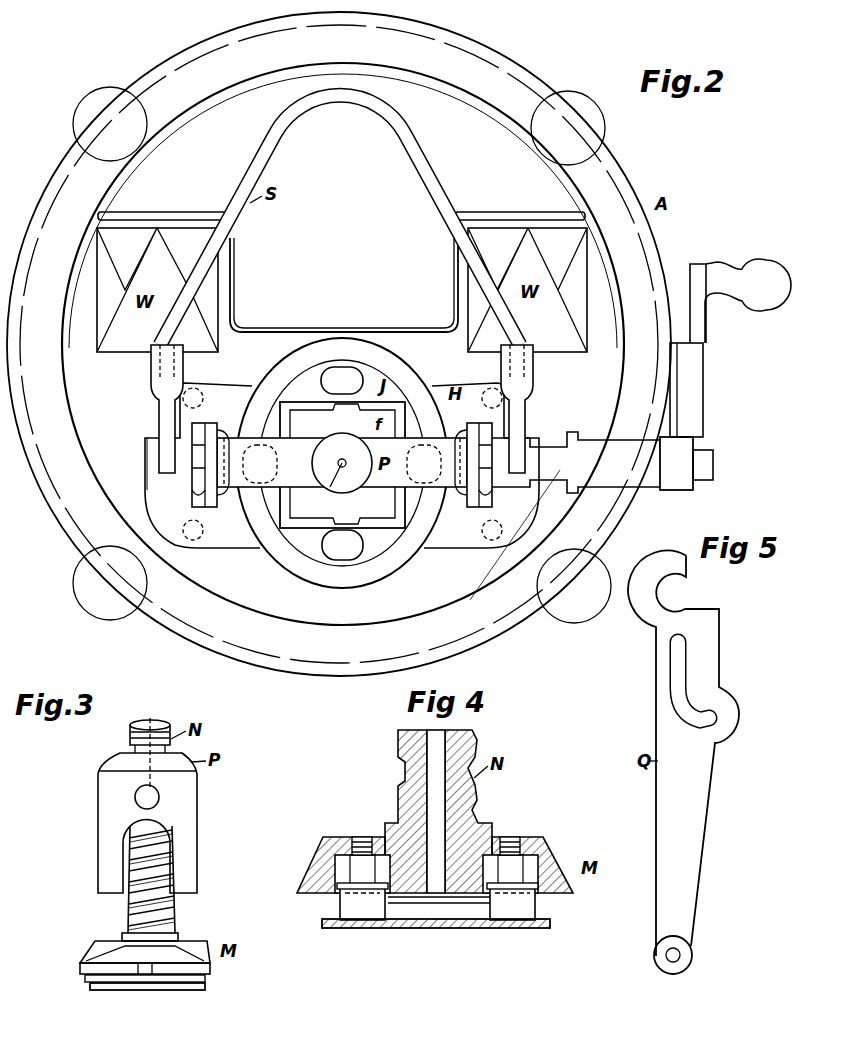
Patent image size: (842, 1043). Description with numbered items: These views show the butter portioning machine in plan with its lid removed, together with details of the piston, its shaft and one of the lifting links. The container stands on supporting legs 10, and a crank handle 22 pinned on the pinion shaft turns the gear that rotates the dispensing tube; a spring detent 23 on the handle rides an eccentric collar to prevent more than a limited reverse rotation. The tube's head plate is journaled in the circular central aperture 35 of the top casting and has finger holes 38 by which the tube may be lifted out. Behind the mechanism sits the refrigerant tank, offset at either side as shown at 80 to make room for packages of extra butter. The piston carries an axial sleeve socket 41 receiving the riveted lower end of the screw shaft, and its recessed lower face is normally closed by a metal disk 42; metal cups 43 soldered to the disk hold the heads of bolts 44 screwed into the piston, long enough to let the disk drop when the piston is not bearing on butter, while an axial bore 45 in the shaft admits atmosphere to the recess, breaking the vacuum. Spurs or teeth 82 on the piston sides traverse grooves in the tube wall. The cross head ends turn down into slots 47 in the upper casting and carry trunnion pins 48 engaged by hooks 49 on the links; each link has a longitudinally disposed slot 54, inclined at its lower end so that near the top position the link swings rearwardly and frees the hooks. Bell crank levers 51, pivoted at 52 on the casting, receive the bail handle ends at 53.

In FIG. 2, the supporting legs 10 is at (600, 590).
In FIG. 2, the crank handle 22 is at (730, 348).
In FIG. 2, the spring detent 23 is at (694, 438).
In FIG. 2, the circular central aperture 35 is at (414, 384).
In FIG. 2, the finger holes 38 is at (342, 380).
In FIG. 4, the axial sleeve socket 41 is at (470, 840).
In FIG. 3, the metal disk 42 is at (206, 988).
In FIG. 4, the metal disk 42 is at (436, 929).
In FIG. 3, the metal cups 43 is at (202, 978).
In FIG. 4, the metal cups 43 is at (337, 908).
In FIG. 4, the bolts 44 is at (522, 862).
In FIG. 2, the axial bore 45 is at (342, 465).
In FIG. 3, the axial bore 45 is at (152, 722).
In FIG. 4, the axial bore 45 is at (440, 795).
In FIG. 2, the slots 47 is at (490, 499).
In FIG. 3, the trunnion pin 48 is at (160, 797).
In FIG. 2, the hooks 49 is at (476, 503).
In FIG. 5, the hooks 49 is at (656, 562).
In FIG. 2, the bell crank levers 51 is at (159, 412).
In FIG. 2, the pivot 52 is at (146, 462).
In FIG. 2, the bail handle socket connection 53 is at (230, 352).
In FIG. 5, the longitudinally disposed slots 54 is at (669, 674).
In FIG. 2, the offset 80 is at (227, 283).
In FIG. 3, the spurs or teeth 82 is at (150, 976).